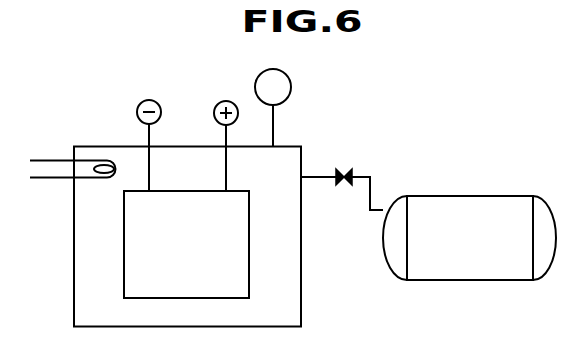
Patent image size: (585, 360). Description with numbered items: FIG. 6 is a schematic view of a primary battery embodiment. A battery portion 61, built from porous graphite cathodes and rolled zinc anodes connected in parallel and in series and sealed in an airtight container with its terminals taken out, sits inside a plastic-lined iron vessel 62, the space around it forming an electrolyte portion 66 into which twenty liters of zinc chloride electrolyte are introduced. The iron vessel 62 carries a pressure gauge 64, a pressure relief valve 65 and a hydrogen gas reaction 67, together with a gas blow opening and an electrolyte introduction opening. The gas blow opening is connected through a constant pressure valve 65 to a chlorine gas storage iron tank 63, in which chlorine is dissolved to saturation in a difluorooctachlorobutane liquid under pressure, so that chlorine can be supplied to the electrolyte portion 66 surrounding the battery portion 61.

The battery portion 61 is at (249, 231).
The iron vessel 62 is at (74, 293).
The chlorine gas storage iron tank 63 is at (504, 196).
The pressure gauge 64 is at (291, 82).
The pressure relief valve 65 is at (343, 169).
The electrolyte portion 66 is at (270, 299).
The hydrogen gas reaction 67 is at (55, 160).